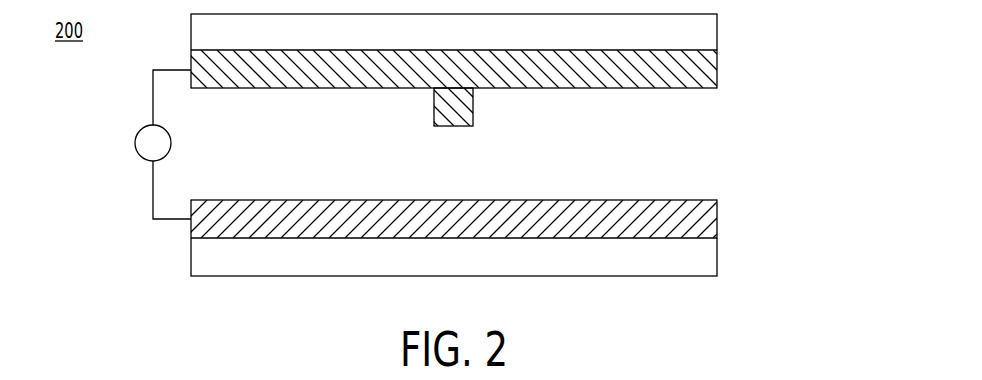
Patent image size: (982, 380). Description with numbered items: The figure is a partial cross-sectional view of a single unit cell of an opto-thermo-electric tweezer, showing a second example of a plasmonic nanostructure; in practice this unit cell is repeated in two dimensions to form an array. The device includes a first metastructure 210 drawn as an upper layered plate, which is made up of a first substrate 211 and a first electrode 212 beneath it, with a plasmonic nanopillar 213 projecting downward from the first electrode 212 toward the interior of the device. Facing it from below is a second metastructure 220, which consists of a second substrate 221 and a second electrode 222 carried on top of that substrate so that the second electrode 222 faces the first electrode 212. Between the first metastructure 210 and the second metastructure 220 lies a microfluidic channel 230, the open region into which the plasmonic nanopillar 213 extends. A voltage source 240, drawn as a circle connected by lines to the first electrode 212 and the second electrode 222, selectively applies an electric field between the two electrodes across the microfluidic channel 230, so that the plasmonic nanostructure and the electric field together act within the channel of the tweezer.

The first metastructure 210 is at (528, 70).
The first substrate 211 is at (717, 28).
The first electrode 212 is at (717, 62).
The plasmonic nanopillar 213 is at (473, 113).
The second metastructure 220 is at (528, 238).
The second substrate 221 is at (717, 256).
The second electrode 222 is at (717, 212).
The microfluidic channel 230 is at (660, 163).
The voltage source 240 is at (136, 148).